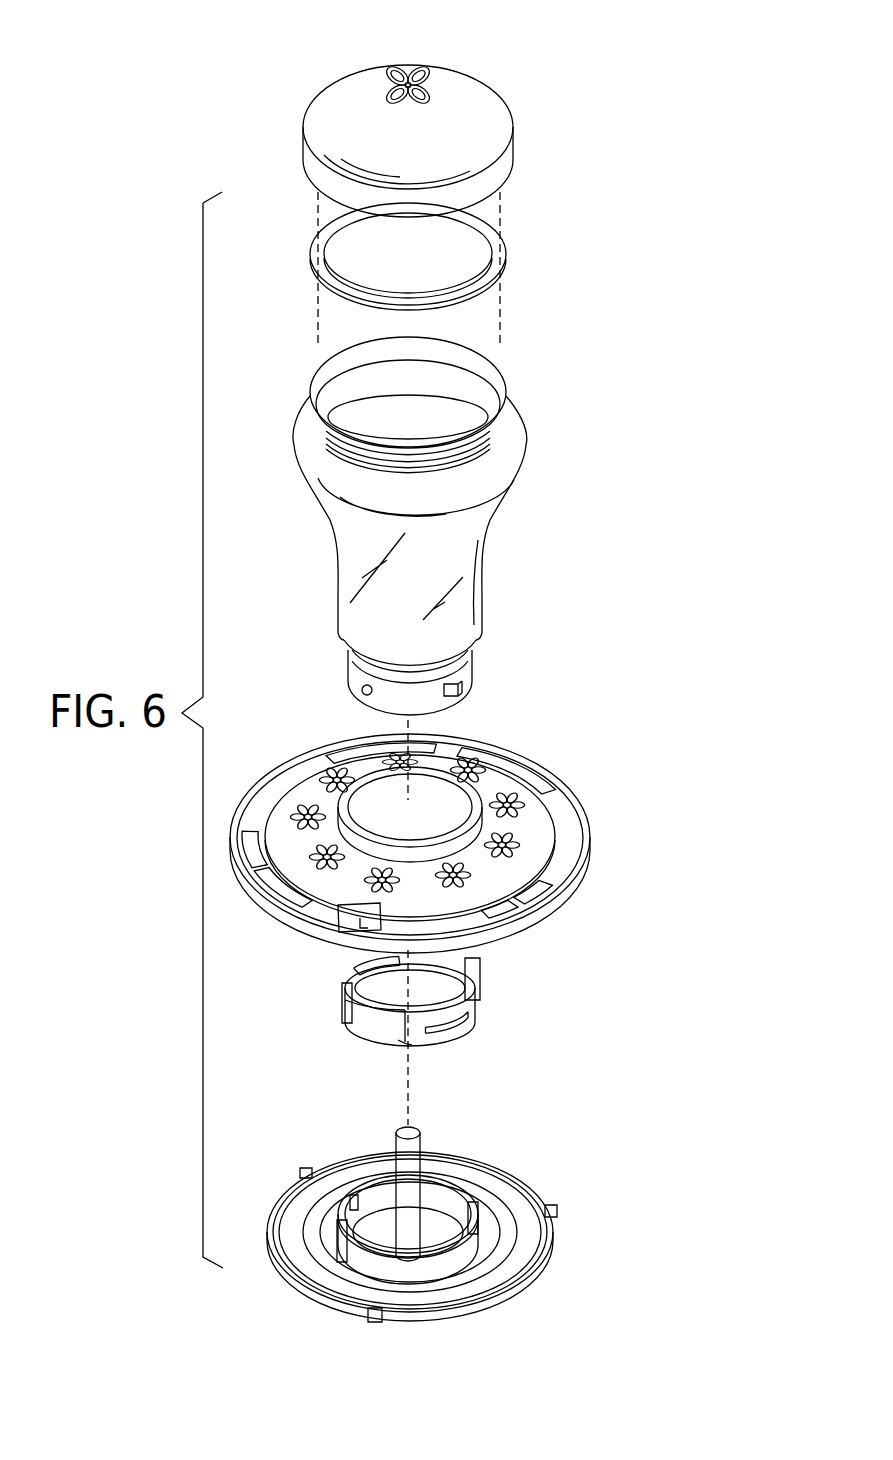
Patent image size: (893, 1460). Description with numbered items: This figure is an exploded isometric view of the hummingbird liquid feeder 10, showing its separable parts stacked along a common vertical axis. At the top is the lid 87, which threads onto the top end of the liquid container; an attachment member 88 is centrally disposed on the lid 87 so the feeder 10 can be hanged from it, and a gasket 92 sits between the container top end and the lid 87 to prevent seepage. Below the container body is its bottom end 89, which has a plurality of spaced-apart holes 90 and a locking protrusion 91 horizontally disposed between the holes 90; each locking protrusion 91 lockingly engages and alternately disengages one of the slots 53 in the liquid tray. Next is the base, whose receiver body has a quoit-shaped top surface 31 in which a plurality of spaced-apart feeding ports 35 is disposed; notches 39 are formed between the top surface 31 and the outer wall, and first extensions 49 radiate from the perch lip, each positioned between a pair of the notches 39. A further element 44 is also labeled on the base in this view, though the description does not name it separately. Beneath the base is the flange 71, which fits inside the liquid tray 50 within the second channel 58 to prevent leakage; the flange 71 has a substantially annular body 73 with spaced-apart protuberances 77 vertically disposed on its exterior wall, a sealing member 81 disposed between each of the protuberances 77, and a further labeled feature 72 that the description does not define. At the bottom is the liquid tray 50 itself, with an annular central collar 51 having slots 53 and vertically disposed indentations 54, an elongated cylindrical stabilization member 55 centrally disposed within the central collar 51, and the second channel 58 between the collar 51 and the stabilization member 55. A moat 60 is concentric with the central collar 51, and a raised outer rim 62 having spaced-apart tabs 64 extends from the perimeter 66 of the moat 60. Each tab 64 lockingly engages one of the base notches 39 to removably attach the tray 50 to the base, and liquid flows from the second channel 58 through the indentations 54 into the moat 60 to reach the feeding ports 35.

The hummingbird liquid feeder 10 is at (680, 387).
The lid 87 is at (507, 107).
The attachment member 88 is at (440, 67).
The gasket 92 is at (507, 243).
The bottom end 89 is at (473, 677).
The holes 90 is at (360, 690).
The locking protrusion 91 is at (462, 698).
The top surface 31 is at (500, 785).
The notch 39 is at (557, 818).
The feeding ports 35 is at (505, 845).
The outer rim 44 is at (582, 873).
The first extensions 49 is at (523, 900).
The flange 71 is at (480, 1015).
The protuberances 77 is at (347, 988).
The sealing member 81 is at (452, 1035).
The ring wall 72 is at (338, 1013).
The body 73 is at (407, 1045).
The liquid tray 50 is at (553, 1253).
The outer rim 62 is at (550, 1230).
The perimeter 66 is at (525, 1280).
The moat 60 is at (328, 1257).
The tabs 64 is at (545, 1210).
The central collar 51 is at (507, 1190).
The second channel 58 is at (447, 1258).
The slots 53 is at (470, 1212).
The indentations 54 is at (344, 1246).
The stabilization member 55 is at (425, 1165).